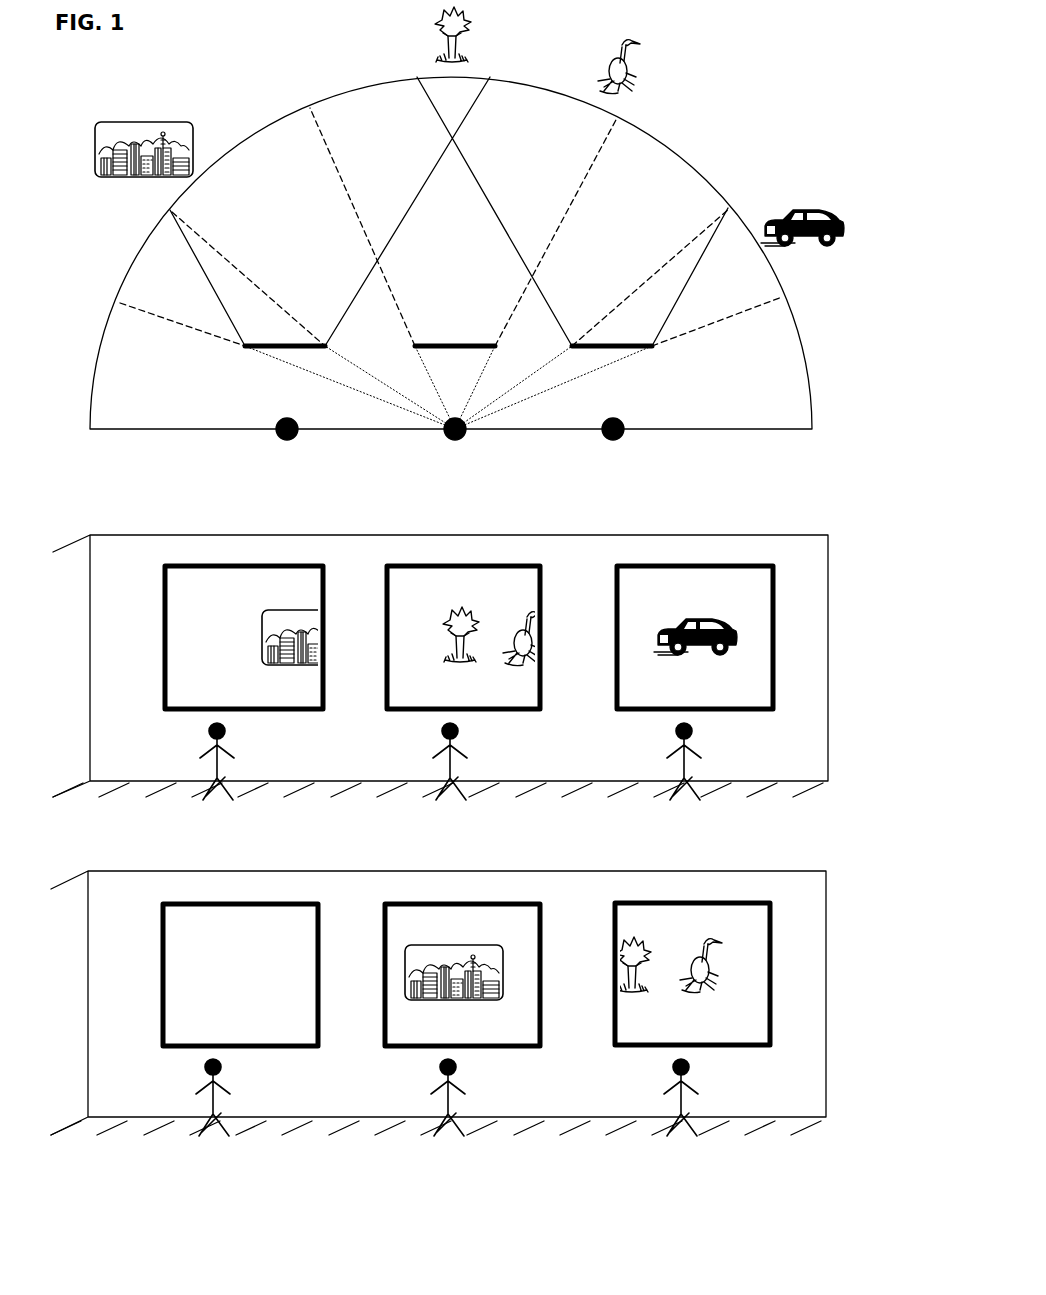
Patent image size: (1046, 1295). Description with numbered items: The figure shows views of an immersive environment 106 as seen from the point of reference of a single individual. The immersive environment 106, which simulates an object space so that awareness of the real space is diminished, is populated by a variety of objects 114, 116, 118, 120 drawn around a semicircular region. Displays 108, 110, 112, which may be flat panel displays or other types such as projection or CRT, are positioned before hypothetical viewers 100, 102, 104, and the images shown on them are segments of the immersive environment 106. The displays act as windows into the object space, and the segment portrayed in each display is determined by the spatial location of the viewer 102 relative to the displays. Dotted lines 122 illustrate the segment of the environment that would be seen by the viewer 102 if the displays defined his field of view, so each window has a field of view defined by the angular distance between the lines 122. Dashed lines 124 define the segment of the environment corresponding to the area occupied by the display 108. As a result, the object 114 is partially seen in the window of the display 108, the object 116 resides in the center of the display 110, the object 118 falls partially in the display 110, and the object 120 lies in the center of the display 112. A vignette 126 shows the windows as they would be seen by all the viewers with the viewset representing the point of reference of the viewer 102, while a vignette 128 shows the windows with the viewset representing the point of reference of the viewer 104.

The hypothetical viewer 100 is at (278, 450).
The viewer 102 is at (452, 447).
The viewer 104 is at (607, 450).
The immersive environment 106 is at (286, 113).
The display 108 is at (293, 345).
The display 110 is at (450, 345).
The display 112 is at (620, 345).
The object 114 is at (140, 108).
The object 116 is at (480, 32).
The object 118 is at (645, 72).
The object 120 is at (794, 198).
The dotted lines 122 is at (512, 398).
The dashed lines 124 is at (112, 298).
The vignette 126 is at (772, 543).
The vignette 128 is at (781, 892).